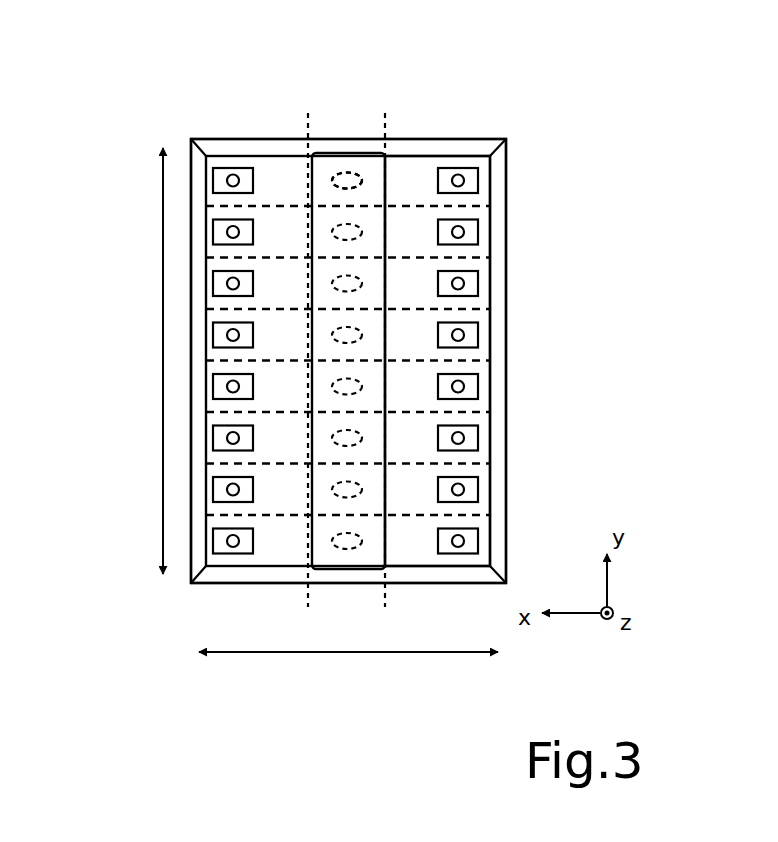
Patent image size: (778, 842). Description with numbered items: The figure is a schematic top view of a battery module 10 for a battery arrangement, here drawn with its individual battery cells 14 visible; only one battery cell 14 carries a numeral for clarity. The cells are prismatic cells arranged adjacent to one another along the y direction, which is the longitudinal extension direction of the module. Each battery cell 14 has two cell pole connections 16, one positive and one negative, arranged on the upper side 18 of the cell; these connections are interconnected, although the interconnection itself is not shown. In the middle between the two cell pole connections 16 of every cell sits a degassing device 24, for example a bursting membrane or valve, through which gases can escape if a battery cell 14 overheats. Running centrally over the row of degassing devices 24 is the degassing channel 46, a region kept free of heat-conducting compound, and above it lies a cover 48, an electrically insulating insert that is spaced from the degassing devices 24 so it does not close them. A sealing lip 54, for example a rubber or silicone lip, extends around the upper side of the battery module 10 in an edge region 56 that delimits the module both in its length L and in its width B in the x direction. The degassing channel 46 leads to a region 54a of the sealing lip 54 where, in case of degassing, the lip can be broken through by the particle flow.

The battery module 10 is at (188, 135).
The battery cell 14 is at (483, 199).
The cell pole connection 16 is at (233, 178).
The upper side 18 is at (408, 167).
The degassing device 24 is at (346, 173).
The degassing channel 46 is at (361, 160).
The cover 48 is at (347, 181).
The sealing lip 54 is at (506, 325).
The region of the sealing lip 54a is at (323, 139).
The edge region 56 is at (497, 255).
The length L is at (163, 345).
The width B is at (343, 655).